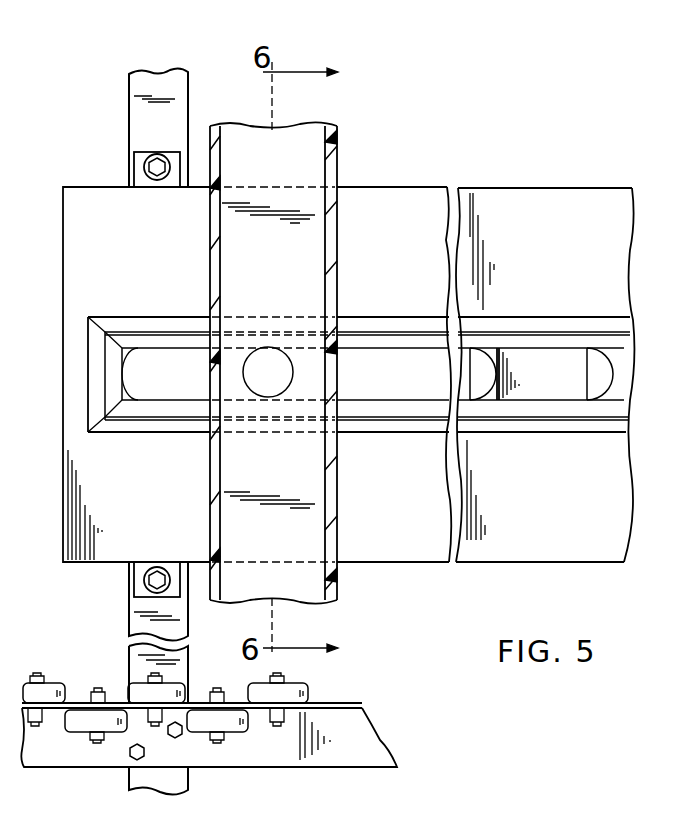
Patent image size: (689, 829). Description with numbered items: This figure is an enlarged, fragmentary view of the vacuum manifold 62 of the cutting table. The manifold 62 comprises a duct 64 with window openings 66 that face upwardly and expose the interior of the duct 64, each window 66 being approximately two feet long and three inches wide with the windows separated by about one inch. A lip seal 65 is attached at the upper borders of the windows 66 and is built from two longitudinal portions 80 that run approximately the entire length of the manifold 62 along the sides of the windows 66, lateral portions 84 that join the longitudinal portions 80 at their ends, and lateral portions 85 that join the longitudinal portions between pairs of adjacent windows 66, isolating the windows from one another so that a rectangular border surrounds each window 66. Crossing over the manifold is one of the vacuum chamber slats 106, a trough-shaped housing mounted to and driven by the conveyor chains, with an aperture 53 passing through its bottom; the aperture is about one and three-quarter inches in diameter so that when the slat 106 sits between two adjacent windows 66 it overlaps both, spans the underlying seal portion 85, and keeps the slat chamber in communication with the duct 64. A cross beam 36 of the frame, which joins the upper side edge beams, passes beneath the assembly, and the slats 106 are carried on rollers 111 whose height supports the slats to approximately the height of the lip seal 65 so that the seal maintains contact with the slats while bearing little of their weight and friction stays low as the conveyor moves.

The cross beam 36 is at (129, 92).
The vacuum chamber slat 106 is at (310, 146).
The vacuum manifold 62 is at (533, 180).
The duct 64 is at (594, 190).
The lip seal 65 is at (626, 420).
The window opening 66 is at (372, 360).
The longitudinal portion 80 is at (593, 323).
The lateral portion 84 is at (112, 398).
The lateral portion 85 is at (543, 362).
The aperture 53 is at (246, 377).
The roller 111 is at (315, 689).